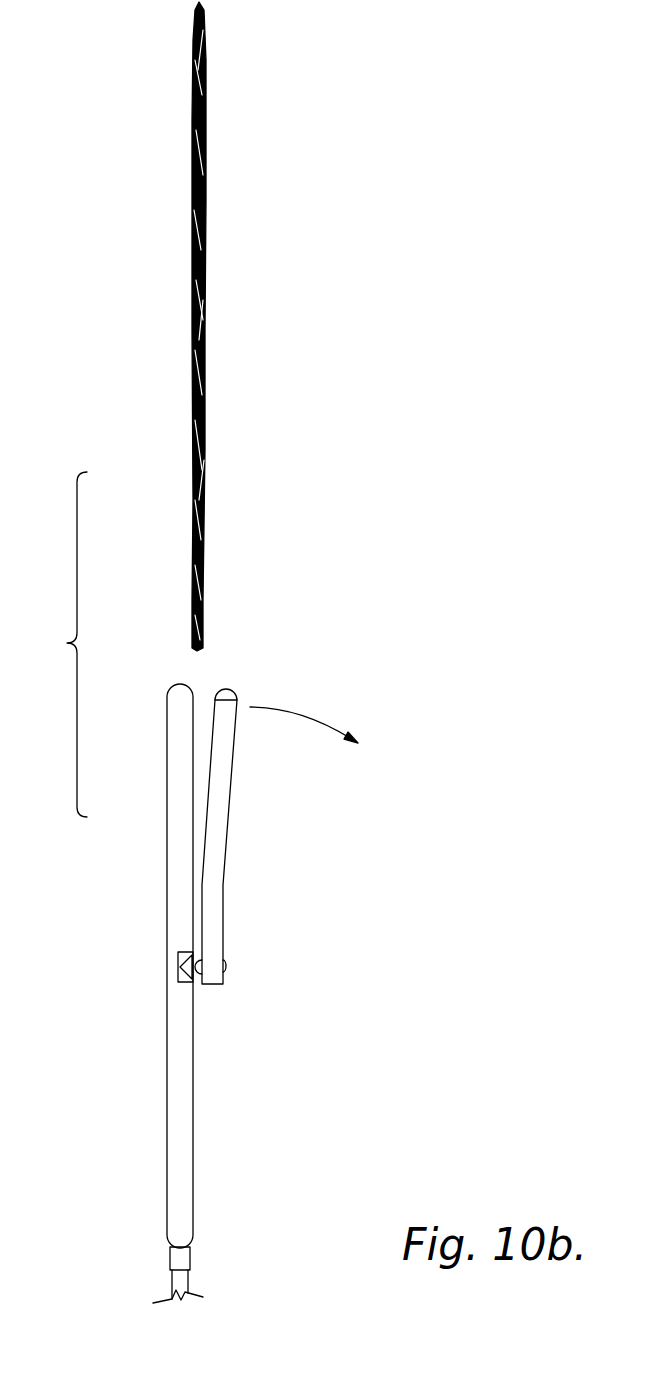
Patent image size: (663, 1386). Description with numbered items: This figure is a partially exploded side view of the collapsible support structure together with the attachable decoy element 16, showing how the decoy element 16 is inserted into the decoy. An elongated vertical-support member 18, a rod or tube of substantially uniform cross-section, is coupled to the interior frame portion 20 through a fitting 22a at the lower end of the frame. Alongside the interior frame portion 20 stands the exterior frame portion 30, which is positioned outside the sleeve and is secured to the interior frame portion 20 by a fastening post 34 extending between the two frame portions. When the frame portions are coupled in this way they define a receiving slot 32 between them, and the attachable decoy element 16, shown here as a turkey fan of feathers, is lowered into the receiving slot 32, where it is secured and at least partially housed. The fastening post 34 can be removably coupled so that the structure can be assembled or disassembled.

The attachable decoy element 16 is at (202, 273).
The vertical-support member 18 is at (178, 1285).
The interior frame portion 20 is at (178, 1063).
The fitting 22a is at (183, 1260).
The exterior frame portion 30 is at (212, 922).
The receiving slot 32 is at (205, 702).
The fastening post 34 is at (202, 968).